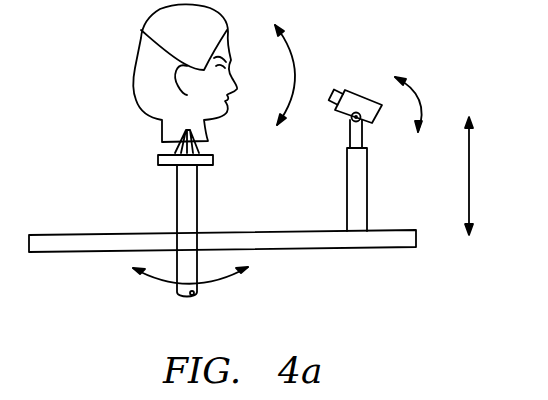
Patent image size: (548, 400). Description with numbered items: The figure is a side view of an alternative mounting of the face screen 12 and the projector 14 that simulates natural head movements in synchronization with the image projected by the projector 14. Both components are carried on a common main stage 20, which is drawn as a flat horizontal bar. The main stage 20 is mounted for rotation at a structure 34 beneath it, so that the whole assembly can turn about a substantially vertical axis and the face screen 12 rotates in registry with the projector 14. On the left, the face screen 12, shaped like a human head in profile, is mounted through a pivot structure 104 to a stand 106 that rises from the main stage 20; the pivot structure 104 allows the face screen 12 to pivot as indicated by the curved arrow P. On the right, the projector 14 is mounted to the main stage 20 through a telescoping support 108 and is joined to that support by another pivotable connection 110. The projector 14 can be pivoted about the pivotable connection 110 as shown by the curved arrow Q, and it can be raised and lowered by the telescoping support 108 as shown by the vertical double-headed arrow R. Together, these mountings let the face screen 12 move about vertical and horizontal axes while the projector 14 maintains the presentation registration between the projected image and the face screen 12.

The face screen 12 is at (141, 30).
The pivot structure 104 is at (158, 160).
The stand 106 is at (196, 202).
The structure for rotation 34 is at (178, 277).
The main stage 20 is at (315, 248).
The telescoping support 108 is at (364, 209).
The projector 14 is at (360, 91).
The pivotable connection 110 is at (351, 119).
The arrow P is at (293, 52).
The arrow Q is at (417, 100).
The arrow R is at (469, 172).